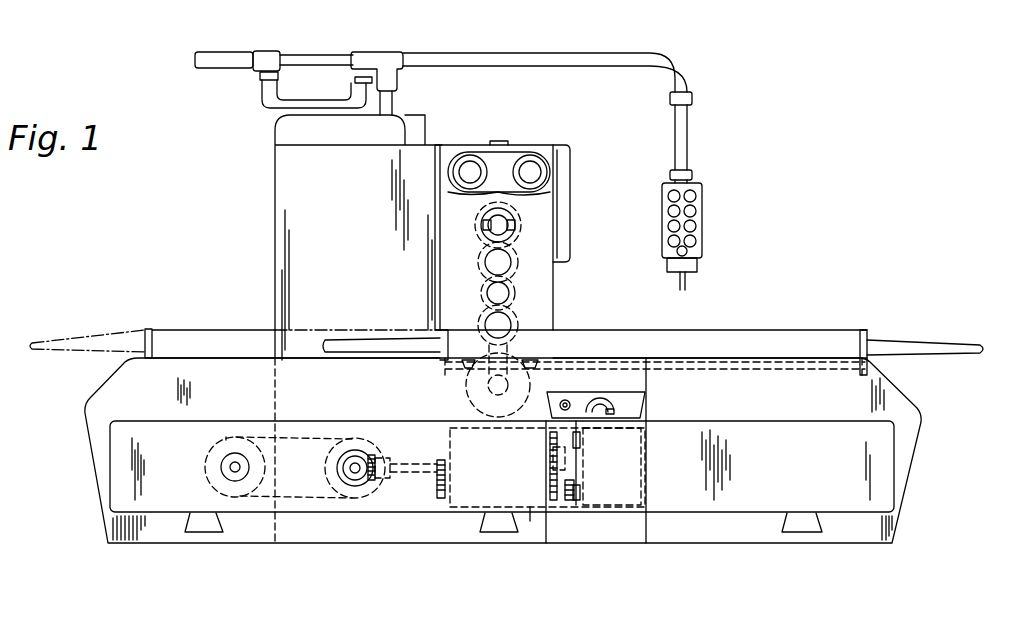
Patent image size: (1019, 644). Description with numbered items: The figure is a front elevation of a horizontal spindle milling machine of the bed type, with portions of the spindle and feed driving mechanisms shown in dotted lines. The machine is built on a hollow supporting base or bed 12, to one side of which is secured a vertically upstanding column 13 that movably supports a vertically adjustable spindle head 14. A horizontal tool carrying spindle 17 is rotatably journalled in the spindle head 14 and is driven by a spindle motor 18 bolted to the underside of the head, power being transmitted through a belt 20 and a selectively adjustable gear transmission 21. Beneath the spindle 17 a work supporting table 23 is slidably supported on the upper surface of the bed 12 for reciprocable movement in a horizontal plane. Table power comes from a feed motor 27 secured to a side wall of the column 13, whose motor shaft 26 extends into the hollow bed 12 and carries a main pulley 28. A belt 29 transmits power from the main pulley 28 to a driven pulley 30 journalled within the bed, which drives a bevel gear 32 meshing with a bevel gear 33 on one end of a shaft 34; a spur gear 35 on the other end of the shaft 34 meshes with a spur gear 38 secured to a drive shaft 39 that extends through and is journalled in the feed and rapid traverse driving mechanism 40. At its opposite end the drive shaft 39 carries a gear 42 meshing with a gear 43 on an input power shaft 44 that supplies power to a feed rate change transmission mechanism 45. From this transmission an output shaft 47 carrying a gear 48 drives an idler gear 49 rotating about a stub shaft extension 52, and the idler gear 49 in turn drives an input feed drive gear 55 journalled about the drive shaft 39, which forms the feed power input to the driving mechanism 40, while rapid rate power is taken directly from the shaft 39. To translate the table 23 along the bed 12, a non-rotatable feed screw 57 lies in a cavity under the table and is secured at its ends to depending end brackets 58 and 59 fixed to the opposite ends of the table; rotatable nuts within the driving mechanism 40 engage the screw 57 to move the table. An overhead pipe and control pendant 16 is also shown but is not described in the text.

The supporting base or bed 12 is at (243, 528).
The column or upright 13 is at (292, 183).
The spindle head 14 is at (553, 200).
The overhead pipe and control pendant 16 is at (448, 170).
The tool carrying spindle 17 is at (508, 217).
The spindle motor 18 is at (476, 396).
The belt 20 is at (520, 336).
The gear transmission 21 is at (518, 292).
The work supporting table 23 is at (778, 336).
The motor shaft 26 is at (230, 471).
The feed motor 27 is at (232, 440).
The main pulley 28 is at (226, 462).
The belt 29 is at (312, 490).
The driven pulley 30 is at (352, 440).
The bevel gear 32 is at (355, 494).
The bevel gear 33 is at (379, 460).
The shaft 34 is at (396, 473).
The spur gear 35 is at (438, 462).
The spur gear 38 is at (437, 500).
The drive shaft 39 is at (444, 490).
The feed and rapid traverse driving mechanism 40 is at (530, 521).
The gear 42 is at (583, 479).
The gear 43 is at (569, 505).
The input power shaft 44 is at (574, 506).
The feed rate change transmission mechanism 45 is at (644, 480).
The output shaft 47 is at (572, 425).
The gear 48 is at (550, 440).
The idler gear 49 is at (581, 445).
The stub shaft extension 52 is at (550, 458).
The input feed drive gear 55 is at (553, 510).
The feed screw 57 is at (695, 372).
The end bracket 58 is at (450, 337).
The end bracket 59 is at (870, 343).